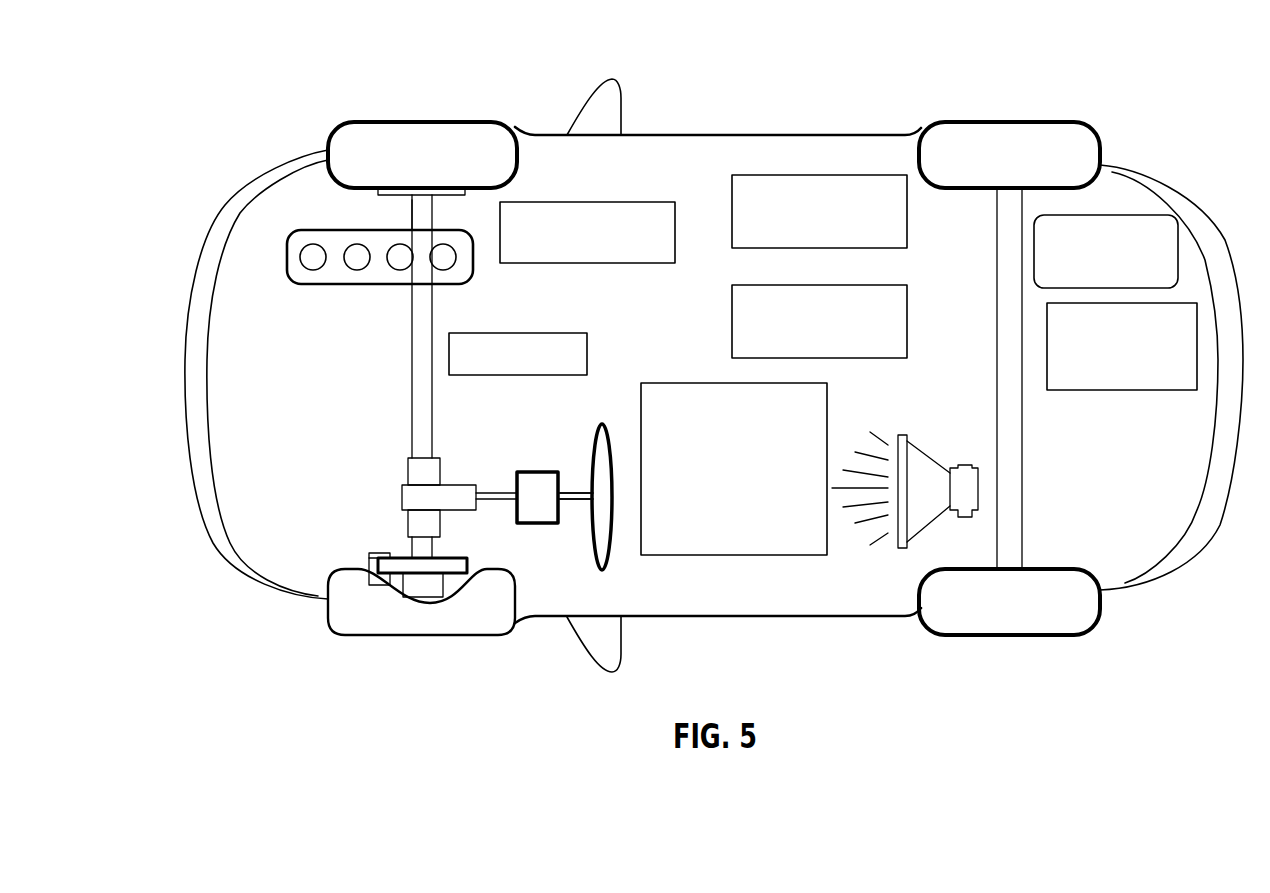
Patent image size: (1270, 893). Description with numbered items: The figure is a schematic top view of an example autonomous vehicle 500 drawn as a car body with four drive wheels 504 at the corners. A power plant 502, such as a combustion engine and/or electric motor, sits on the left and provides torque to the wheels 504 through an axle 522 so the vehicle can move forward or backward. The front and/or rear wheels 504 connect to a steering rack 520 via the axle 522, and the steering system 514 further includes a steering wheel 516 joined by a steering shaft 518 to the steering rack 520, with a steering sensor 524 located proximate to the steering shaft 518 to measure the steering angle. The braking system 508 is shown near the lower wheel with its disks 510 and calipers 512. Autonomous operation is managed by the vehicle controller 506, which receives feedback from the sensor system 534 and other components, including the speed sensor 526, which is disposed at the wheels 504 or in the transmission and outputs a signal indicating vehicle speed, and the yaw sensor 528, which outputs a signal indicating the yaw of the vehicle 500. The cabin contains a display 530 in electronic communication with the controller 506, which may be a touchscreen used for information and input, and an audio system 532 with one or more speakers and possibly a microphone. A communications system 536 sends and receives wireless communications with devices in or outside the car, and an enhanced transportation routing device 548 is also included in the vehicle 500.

The autonomous vehicle 500 is at (186, 78).
The power plant 502 is at (335, 273).
The drive wheels 504 is at (403, 132).
The vehicle controller 506 is at (588, 212).
The braking system 508 is at (337, 503).
The disks 510 is at (466, 563).
The calipers 512 is at (369, 568).
The steering system 514 is at (478, 452).
The steering wheel 516 is at (610, 557).
The steering shaft 518 is at (585, 503).
The steering rack 520 is at (538, 472).
The axle 522 is at (412, 220).
The steering sensor 524 is at (408, 475).
The speed sensor 526 is at (788, 173).
The yaw sensor 528 is at (733, 325).
The display 530 is at (513, 333).
The audio system 532 is at (907, 453).
The sensor system 534 is at (1047, 355).
The communications system 536 is at (1033, 255).
The enhanced transportation routing device 548 is at (690, 383).